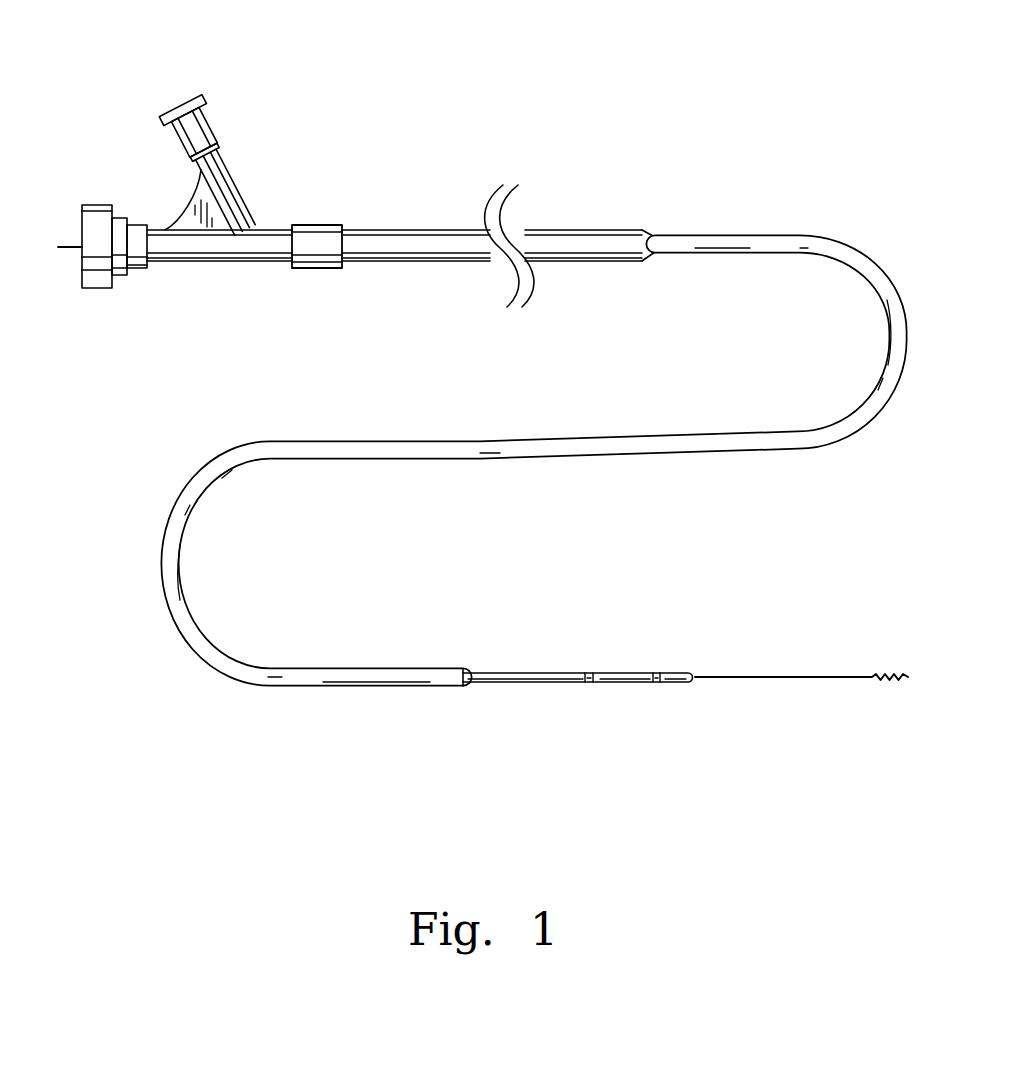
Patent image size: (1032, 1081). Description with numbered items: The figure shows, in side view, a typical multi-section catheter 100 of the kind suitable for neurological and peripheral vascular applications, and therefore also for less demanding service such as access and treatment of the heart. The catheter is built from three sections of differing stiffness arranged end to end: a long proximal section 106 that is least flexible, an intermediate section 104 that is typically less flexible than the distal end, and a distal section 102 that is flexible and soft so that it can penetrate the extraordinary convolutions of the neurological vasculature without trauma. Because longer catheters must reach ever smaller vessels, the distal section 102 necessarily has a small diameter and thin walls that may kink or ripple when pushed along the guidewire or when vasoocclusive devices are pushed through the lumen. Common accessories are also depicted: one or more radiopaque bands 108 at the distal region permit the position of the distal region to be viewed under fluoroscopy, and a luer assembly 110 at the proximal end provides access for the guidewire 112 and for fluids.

The multi-section catheter 100 is at (762, 61).
The distal section 102 is at (697, 707).
The intermediate section 104 is at (421, 439).
The proximal section 106 is at (650, 178).
The radiopaque bands 108 is at (658, 670).
The luer assembly 110 is at (197, 265).
The guidewire 112 is at (68, 243).